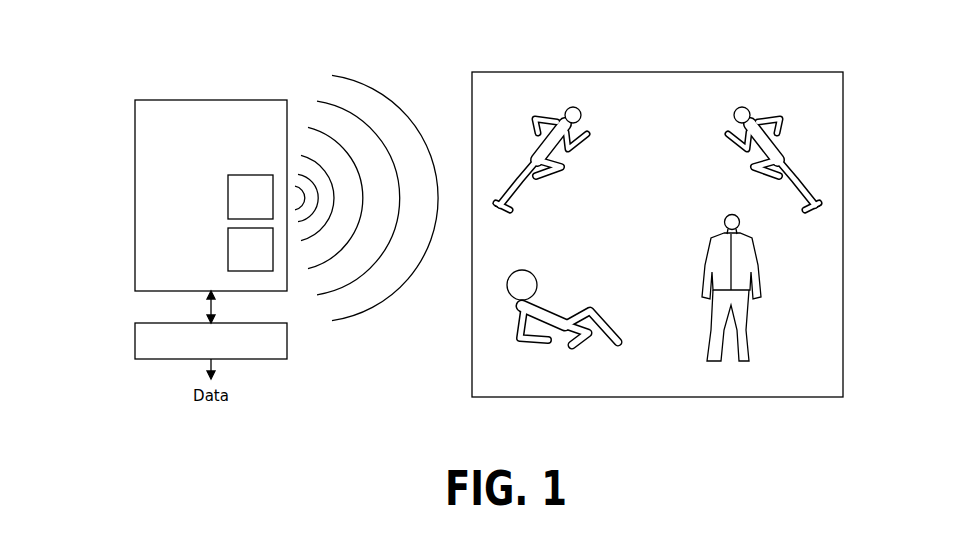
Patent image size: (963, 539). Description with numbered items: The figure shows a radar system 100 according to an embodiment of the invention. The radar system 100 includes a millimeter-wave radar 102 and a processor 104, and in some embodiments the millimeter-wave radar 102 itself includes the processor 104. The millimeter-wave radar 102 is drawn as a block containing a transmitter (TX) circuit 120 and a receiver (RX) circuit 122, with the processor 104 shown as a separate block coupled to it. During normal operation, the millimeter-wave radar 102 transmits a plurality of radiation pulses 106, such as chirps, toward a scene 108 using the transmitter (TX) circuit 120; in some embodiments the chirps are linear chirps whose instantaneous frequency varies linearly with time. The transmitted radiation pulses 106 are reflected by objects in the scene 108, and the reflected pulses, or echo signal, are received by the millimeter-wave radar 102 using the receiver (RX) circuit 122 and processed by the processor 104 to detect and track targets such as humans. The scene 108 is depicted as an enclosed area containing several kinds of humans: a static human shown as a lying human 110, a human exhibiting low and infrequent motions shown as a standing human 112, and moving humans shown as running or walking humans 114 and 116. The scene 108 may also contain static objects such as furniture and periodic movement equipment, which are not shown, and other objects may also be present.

The radar system 100 is at (112, 47).
The millimeter-wave radar 102 is at (187, 100).
The processor 104 is at (150, 323).
The radiation pulses 106 is at (404, 88).
The scene 108 is at (566, 72).
The lying human 110 is at (600, 318).
The standing human 112 is at (747, 333).
The running or walking human 114 is at (587, 113).
The running or walking human 116 is at (729, 113).
The transmitter (TX) circuit 120 is at (228, 191).
The receiver (RX) circuit 122 is at (228, 233).